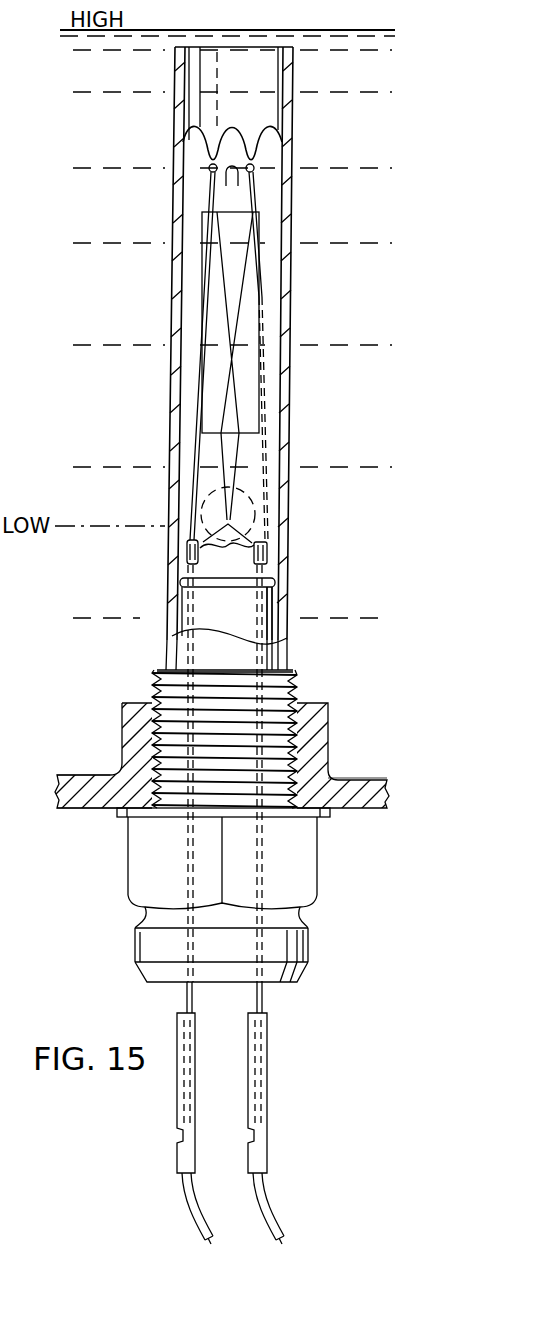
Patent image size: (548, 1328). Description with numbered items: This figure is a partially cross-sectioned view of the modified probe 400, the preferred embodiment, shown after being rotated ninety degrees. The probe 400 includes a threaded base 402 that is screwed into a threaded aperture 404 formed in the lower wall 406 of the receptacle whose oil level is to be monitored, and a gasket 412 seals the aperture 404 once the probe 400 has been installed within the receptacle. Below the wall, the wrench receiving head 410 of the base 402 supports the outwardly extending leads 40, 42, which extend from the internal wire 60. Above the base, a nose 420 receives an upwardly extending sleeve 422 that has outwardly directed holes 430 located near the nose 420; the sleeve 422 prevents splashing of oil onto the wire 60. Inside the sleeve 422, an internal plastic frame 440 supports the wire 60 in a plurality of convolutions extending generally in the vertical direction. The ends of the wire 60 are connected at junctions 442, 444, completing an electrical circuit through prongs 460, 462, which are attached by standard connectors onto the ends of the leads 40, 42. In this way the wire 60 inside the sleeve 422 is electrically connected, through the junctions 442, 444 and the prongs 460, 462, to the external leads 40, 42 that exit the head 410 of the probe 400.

The modified probe 400 is at (294, 329).
The sleeve 422 is at (290, 234).
The internal plastic frame 440 is at (195, 180).
The internal wire 60 is at (191, 398).
The outwardly directed holes 430 is at (227, 544).
The junction 442 is at (186, 548).
The junction 444 is at (268, 552).
The nose 420 is at (250, 604).
The threaded base 402 is at (297, 692).
The threaded aperture 404 is at (300, 750).
The gasket 412 is at (330, 782).
The lower wall 406 is at (76, 812).
The wrench receiving head 410 is at (302, 873).
The prong 460 is at (184, 998).
The prong 462 is at (264, 998).
The lead 40 is at (185, 1200).
The lead 42 is at (265, 1203).